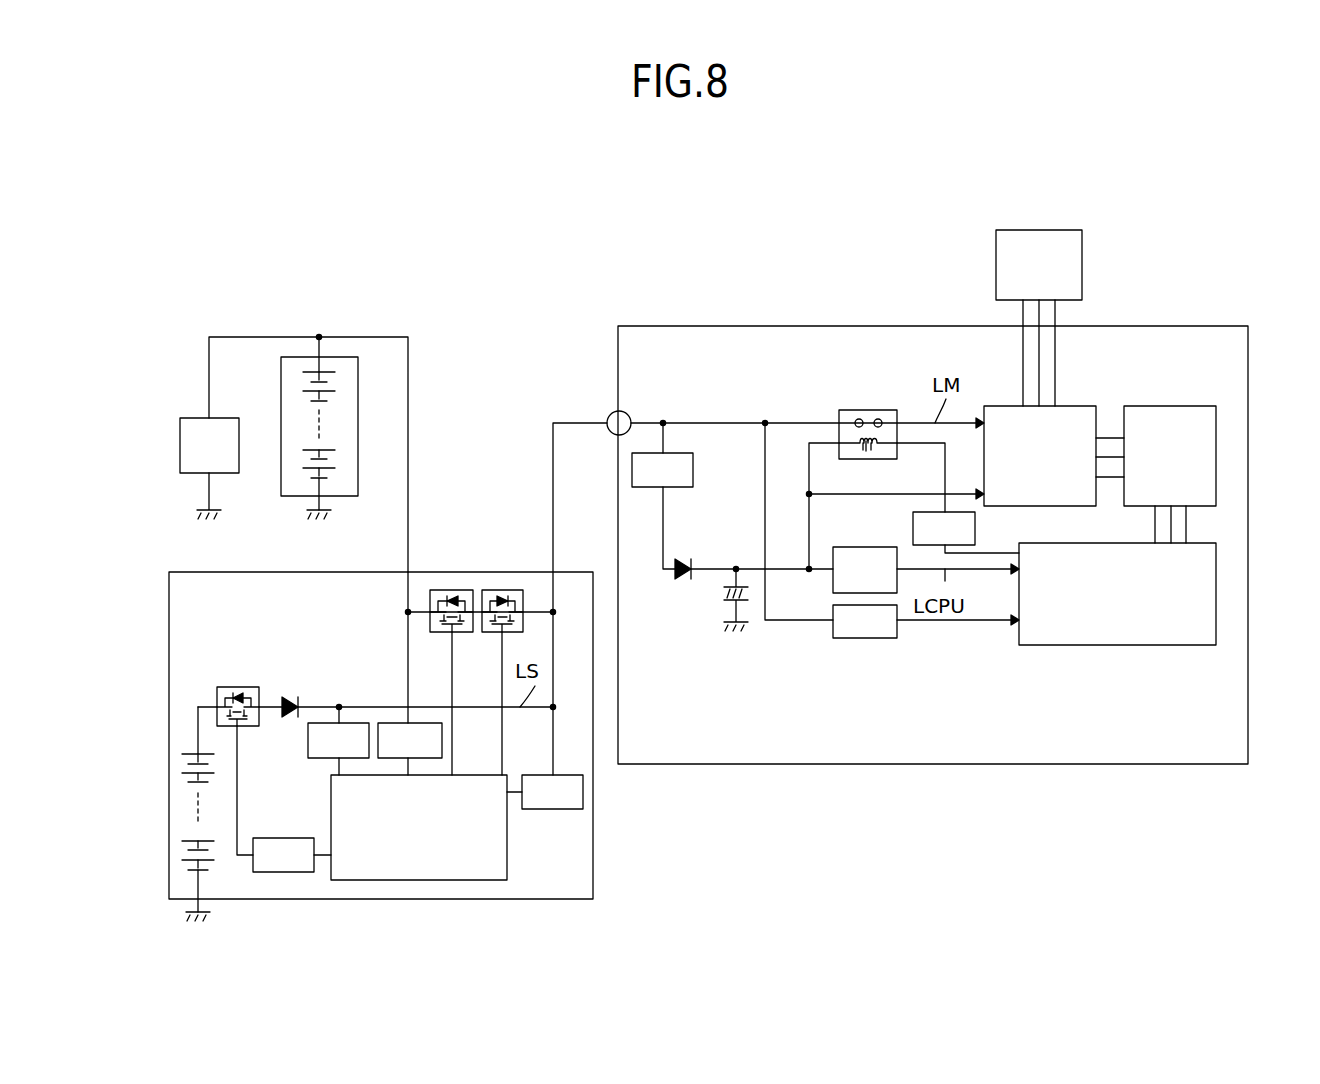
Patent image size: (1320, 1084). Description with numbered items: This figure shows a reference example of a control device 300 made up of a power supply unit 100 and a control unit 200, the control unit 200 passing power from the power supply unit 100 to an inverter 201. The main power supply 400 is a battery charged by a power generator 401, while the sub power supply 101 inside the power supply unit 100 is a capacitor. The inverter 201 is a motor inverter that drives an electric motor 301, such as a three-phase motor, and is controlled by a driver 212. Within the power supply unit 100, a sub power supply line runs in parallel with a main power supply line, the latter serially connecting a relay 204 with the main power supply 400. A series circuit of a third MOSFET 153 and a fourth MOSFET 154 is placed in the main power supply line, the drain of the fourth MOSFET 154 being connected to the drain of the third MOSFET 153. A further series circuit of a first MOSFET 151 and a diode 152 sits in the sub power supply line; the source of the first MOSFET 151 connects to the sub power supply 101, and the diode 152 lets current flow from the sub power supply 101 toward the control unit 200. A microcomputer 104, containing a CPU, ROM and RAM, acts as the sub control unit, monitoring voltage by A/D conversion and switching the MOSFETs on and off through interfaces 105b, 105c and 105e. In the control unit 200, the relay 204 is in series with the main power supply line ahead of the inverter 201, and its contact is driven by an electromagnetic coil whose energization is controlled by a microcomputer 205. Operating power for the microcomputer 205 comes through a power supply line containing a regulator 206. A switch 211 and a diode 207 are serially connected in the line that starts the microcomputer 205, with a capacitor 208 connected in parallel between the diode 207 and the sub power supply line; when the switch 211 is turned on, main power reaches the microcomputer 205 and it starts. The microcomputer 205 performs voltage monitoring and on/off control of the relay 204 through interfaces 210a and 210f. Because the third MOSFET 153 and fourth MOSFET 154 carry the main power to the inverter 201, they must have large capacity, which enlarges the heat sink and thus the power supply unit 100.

The power supply unit 100 is at (447, 899).
The sub power supply 101 is at (217, 848).
The microcomputer 104 is at (507, 860).
The interface 105b is at (308, 742).
The interface 105c is at (280, 872).
The interface 105e is at (395, 723).
The first MOSFET 151 is at (235, 687).
The diode 152 is at (292, 697).
The third MOSFET 153 is at (451, 590).
The fourth MOSFET 154 is at (503, 590).
The control unit 200 is at (694, 326).
The inverter 201 is at (1071, 406).
The relay 204 is at (868, 410).
The microcomputer 205 is at (1123, 645).
The regulator 206 is at (560, 809).
The diode 207 is at (690, 559).
The capacitor 208 is at (724, 592).
The interface 210a is at (860, 638).
The interface 210f is at (975, 528).
The switch SW 211 is at (693, 473).
The driver 212 is at (1168, 406).
The control device 300 is at (510, 300).
The electric motor 301 is at (1082, 265).
The main power supply 400 is at (335, 357).
The power generator 401 is at (222, 418).